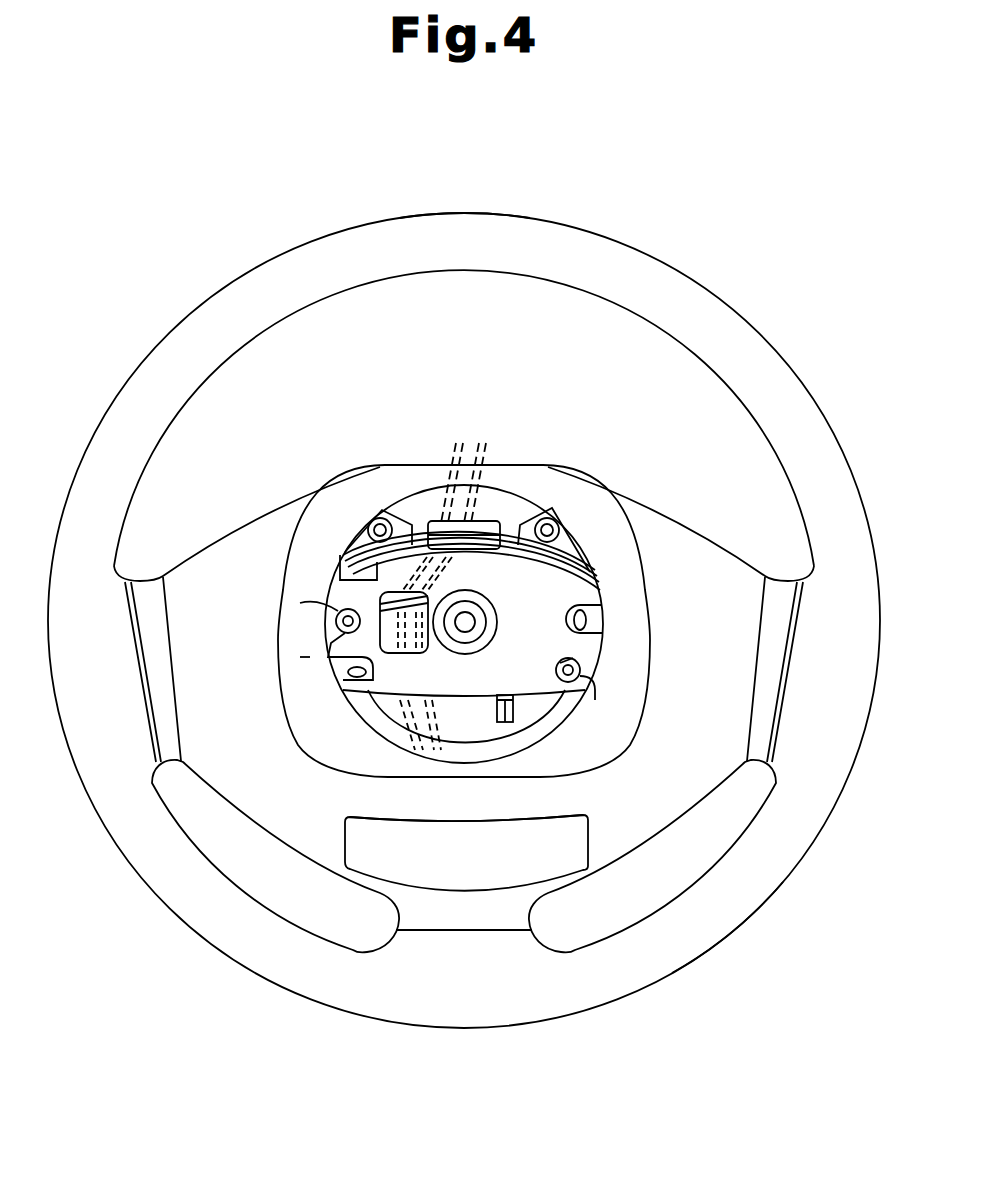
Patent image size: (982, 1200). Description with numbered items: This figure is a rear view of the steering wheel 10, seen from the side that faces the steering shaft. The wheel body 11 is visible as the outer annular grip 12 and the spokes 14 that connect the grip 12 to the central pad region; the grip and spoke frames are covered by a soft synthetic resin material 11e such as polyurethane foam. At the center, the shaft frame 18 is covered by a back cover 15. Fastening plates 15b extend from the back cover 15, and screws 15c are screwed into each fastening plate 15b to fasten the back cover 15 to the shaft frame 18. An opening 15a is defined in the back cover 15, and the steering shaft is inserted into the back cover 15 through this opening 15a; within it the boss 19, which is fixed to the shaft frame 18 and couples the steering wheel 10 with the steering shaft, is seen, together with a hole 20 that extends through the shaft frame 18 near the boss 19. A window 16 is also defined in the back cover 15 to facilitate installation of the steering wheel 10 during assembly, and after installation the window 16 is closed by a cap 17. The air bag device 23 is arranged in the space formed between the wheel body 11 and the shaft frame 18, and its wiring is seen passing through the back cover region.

The steering wheel 10 is at (683, 227).
The body 11 is at (797, 367).
The soft synthetic resin material 11e is at (719, 944).
The annular grip 12 is at (468, 219).
The spokes 14 is at (143, 592).
The back cover 15 is at (657, 517).
The opening 15a is at (432, 500).
The fastening plates 15b is at (330, 600).
The screws 15c is at (337, 631).
The window 16 is at (586, 838).
The cap 17 is at (480, 833).
The shaft frame 18 is at (608, 640).
The boss 19 is at (475, 630).
The hole 20 is at (401, 648).
The air bag device 23 is at (521, 510).